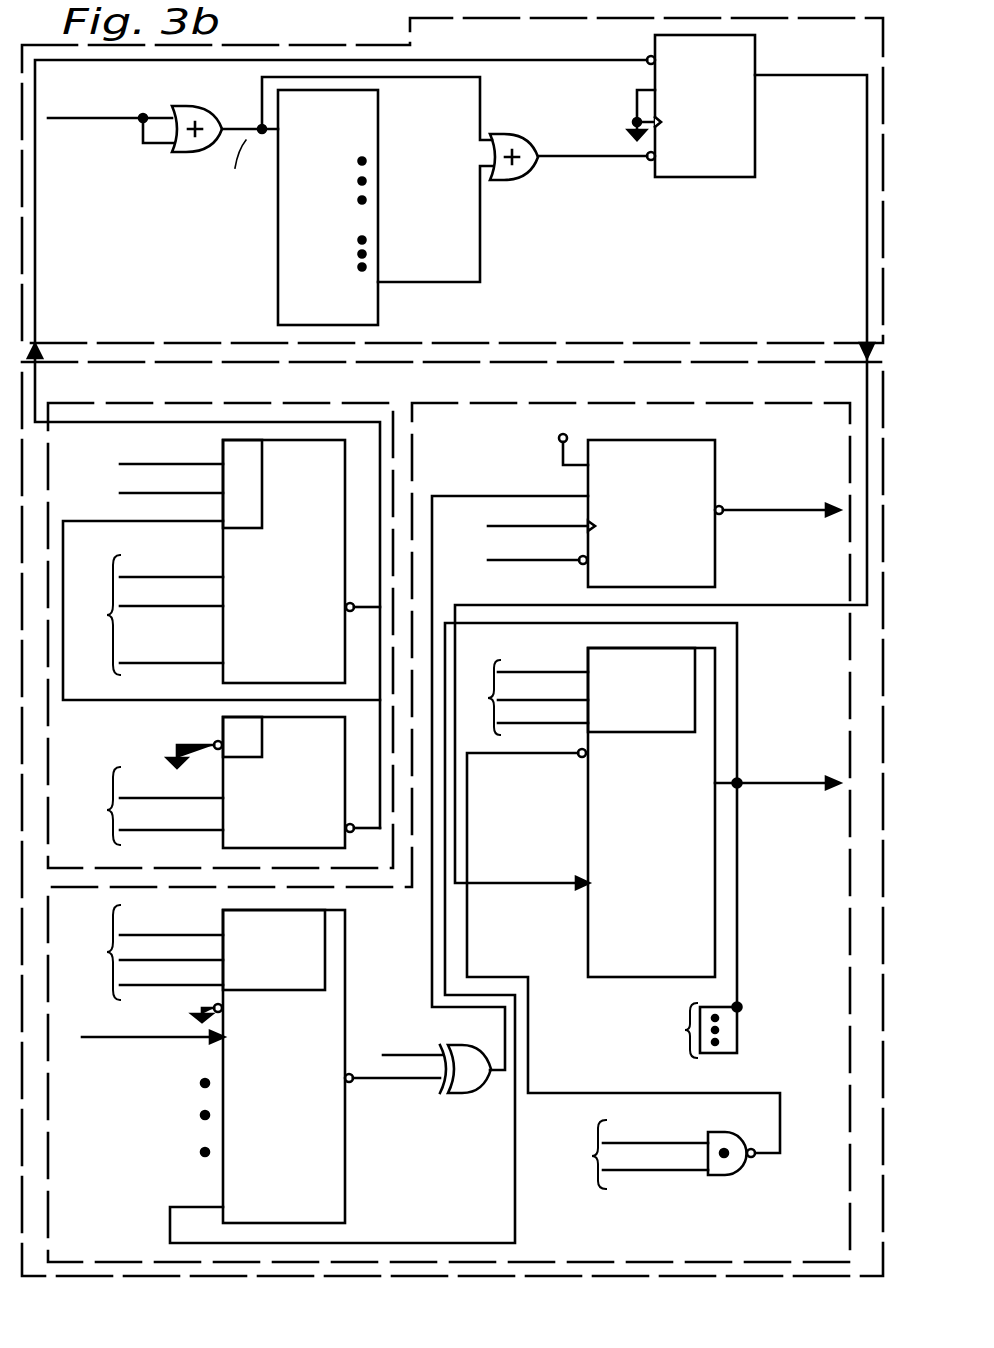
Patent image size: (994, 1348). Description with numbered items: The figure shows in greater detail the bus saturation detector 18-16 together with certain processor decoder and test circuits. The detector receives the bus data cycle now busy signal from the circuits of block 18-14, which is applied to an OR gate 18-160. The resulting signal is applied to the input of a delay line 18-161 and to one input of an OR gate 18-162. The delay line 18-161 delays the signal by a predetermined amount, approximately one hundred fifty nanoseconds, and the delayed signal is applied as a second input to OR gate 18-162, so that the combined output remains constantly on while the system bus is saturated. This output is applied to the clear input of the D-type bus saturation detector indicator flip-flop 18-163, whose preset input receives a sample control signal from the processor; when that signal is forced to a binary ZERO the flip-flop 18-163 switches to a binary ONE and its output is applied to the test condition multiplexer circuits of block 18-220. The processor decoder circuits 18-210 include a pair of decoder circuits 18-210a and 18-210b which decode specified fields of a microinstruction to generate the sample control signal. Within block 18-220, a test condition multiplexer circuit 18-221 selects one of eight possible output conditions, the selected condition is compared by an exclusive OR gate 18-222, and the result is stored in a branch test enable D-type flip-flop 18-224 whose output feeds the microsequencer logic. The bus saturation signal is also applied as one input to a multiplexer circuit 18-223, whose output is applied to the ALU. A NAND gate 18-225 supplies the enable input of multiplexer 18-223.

The bus saturation detector 18-16 is at (720, 331).
The block 18-14 circuits 18-14 is at (111, 116).
The OR gate 18-160 is at (212, 93).
The delay line 18-161 is at (380, 112).
The OR gate 18-162 is at (512, 134).
The bus saturation detector indicator flip-flop 18-163 is at (700, 178).
The processor decoder circuits 18-210 is at (157, 756).
The decoder circuit 18-210a is at (223, 677).
The decoder circuit 18-210b is at (223, 841).
The test multiplexer and microsequencer logic section 18-220 is at (753, 1244).
The test condition multiplexer circuit 18-221 is at (345, 934).
The exclusive OR gate 18-222 is at (458, 1094).
The multiplexer circuit 18-223 is at (715, 680).
The branch test enable flip-flop 18-224 is at (715, 450).
The NAND gate 18-225 is at (740, 1166).